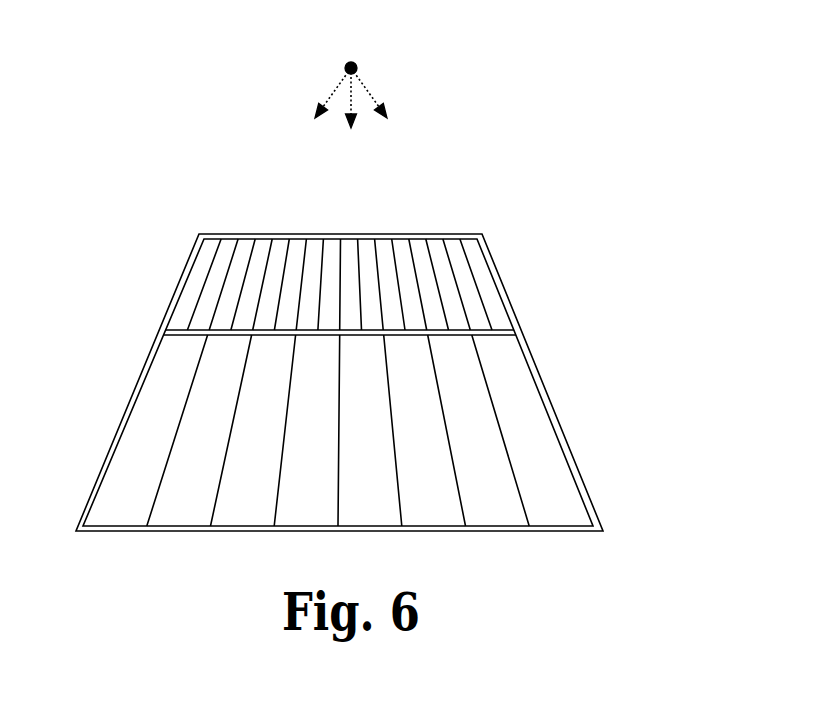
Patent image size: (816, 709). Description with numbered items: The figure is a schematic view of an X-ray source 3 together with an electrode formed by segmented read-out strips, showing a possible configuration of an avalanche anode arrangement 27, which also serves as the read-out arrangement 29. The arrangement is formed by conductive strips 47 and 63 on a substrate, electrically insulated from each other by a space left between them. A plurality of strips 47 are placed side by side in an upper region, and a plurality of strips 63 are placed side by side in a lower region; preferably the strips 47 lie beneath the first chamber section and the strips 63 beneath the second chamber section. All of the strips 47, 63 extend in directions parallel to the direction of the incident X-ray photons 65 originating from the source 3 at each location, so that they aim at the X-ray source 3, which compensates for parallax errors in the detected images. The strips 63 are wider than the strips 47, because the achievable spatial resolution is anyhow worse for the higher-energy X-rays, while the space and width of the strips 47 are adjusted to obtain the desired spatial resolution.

The X-ray source 3 is at (356, 63).
The incident X-ray photons 65 is at (368, 88).
The conductive strips 47 is at (487, 277).
The conductive strips 63 is at (507, 382).
The avalanche anode arrangement 27 is at (401, 382).
The read-out arrangement 29 is at (560, 427).